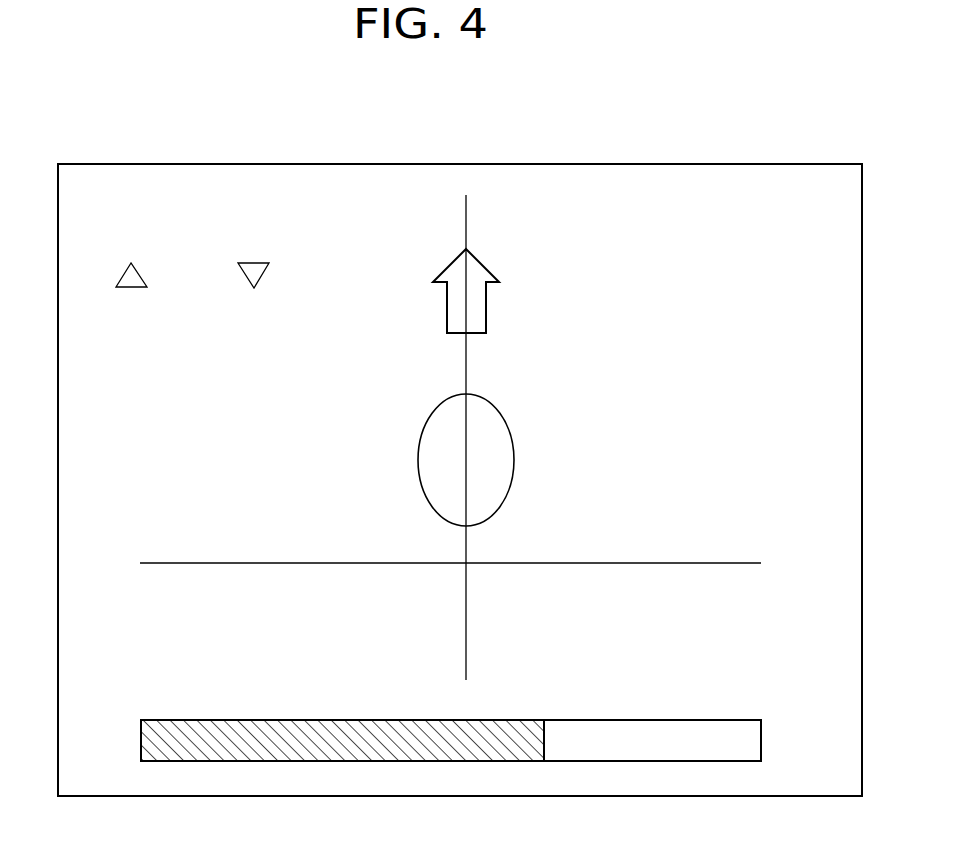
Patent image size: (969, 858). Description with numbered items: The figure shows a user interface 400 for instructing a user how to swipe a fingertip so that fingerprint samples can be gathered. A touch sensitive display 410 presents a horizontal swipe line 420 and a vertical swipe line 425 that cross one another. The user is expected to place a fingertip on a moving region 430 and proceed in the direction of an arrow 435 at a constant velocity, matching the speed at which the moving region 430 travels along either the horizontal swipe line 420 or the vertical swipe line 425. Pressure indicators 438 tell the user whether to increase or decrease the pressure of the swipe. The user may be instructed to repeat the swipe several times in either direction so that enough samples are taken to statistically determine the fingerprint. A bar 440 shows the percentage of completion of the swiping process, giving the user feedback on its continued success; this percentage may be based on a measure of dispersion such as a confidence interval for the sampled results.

The user interface 400 is at (582, 134).
The touch sensitive display 410 is at (136, 164).
The horizontal swipe line 420 is at (719, 562).
The vertical swipe line 425 is at (467, 665).
The moving region 430 is at (512, 430).
The arrow 435 is at (497, 277).
The pressure indicators 438 is at (203, 222).
The bar 440 is at (724, 719).